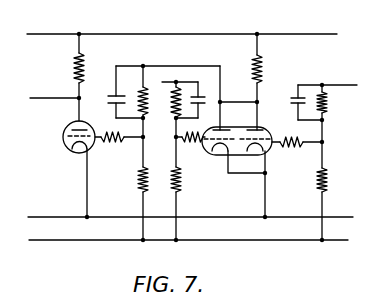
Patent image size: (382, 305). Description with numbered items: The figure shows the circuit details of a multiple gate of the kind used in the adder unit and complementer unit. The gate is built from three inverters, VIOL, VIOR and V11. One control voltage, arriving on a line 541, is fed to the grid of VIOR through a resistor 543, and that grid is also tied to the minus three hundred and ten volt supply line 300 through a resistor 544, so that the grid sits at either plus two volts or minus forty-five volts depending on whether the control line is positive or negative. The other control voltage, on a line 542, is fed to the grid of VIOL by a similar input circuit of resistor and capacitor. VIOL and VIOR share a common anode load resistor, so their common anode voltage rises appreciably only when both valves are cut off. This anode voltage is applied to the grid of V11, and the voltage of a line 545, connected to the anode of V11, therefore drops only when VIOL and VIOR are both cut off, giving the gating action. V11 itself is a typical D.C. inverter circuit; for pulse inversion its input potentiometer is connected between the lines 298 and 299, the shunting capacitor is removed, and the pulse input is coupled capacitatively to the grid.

The line 298 is at (176, 34).
The line 299 is at (183, 217).
The −310 volt supply line 300 is at (190, 240).
The line 541 is at (340, 85).
The line 542 is at (162, 82).
The resistor 543 is at (321, 116).
The resistor 544 is at (323, 177).
The line 545 is at (52, 98).
The inverter V11 is at (66, 146).
The inverter VIOL is at (222, 152).
The inverter VIOR is at (272, 173).